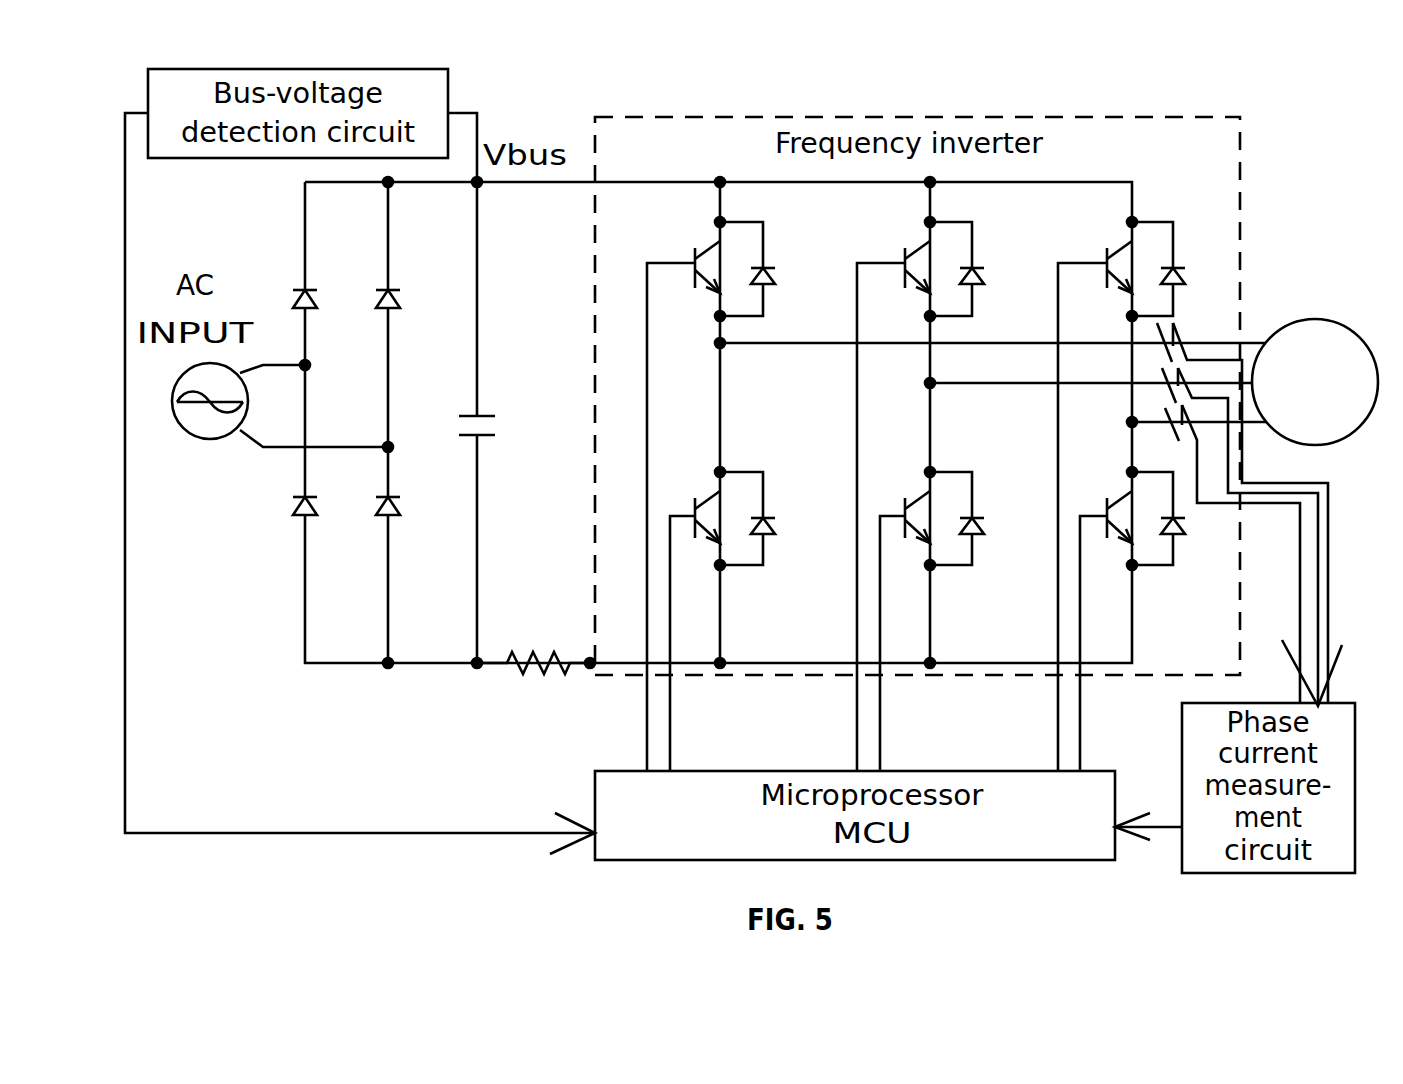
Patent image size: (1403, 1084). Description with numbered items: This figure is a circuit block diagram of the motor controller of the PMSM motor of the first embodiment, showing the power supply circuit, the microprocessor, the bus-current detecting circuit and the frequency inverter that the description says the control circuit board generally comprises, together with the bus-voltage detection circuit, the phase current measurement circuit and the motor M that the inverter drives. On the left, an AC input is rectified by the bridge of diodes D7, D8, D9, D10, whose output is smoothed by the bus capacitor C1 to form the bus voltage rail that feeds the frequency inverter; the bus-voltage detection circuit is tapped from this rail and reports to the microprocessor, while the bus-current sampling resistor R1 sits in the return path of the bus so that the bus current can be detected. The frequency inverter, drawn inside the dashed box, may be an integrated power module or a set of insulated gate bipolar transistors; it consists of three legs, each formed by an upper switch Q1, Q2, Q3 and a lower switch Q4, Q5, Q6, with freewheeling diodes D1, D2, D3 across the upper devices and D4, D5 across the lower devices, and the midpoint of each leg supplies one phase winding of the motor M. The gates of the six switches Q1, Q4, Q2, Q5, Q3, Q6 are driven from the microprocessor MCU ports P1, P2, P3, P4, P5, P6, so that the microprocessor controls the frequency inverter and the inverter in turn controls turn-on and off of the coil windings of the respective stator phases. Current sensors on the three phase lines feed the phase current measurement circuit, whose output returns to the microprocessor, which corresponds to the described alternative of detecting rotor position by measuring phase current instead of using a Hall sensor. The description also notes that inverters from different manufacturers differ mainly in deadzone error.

The upper switching transistor, phase A Q1 is at (691, 263).
The upper switching transistor, phase B Q2 is at (902, 263).
The upper switching transistor, phase C Q3 is at (1105, 263).
The lower switching transistor, phase A Q4 is at (691, 513).
The lower switching transistor, phase B Q5 is at (902, 513).
The lower switching transistor, phase C Q6 is at (1103, 513).
The freewheeling diode of Q1 D1 is at (767, 269).
The freewheeling diode of Q2 D2 is at (976, 269).
The freewheeling diode of Q3 D3 is at (1175, 269).
The freewheeling diode of Q4 D4 is at (767, 518).
The freewheeling diode of Q5 D5 is at (976, 518).
The rectifier diode D7 is at (324, 279).
The rectifier diode D8 is at (408, 277).
The rectifier diode D9 is at (279, 528).
The rectifier diode D10 is at (420, 528).
The bus capacitor C1 is at (491, 422).
The bus current sampling resistor R1 is at (533, 642).
The MCU control port for Q1 P1 is at (646, 517).
The MCU control port for Q4 P2 is at (690, 643).
The MCU control port for Q2 P3 is at (856, 517).
The MCU control port for Q5 P4 is at (901, 643).
The MCU control port for Q3 P5 is at (1054, 517).
The MCU control port for Q6 P6 is at (1101, 643).
The motor M is at (1315, 382).